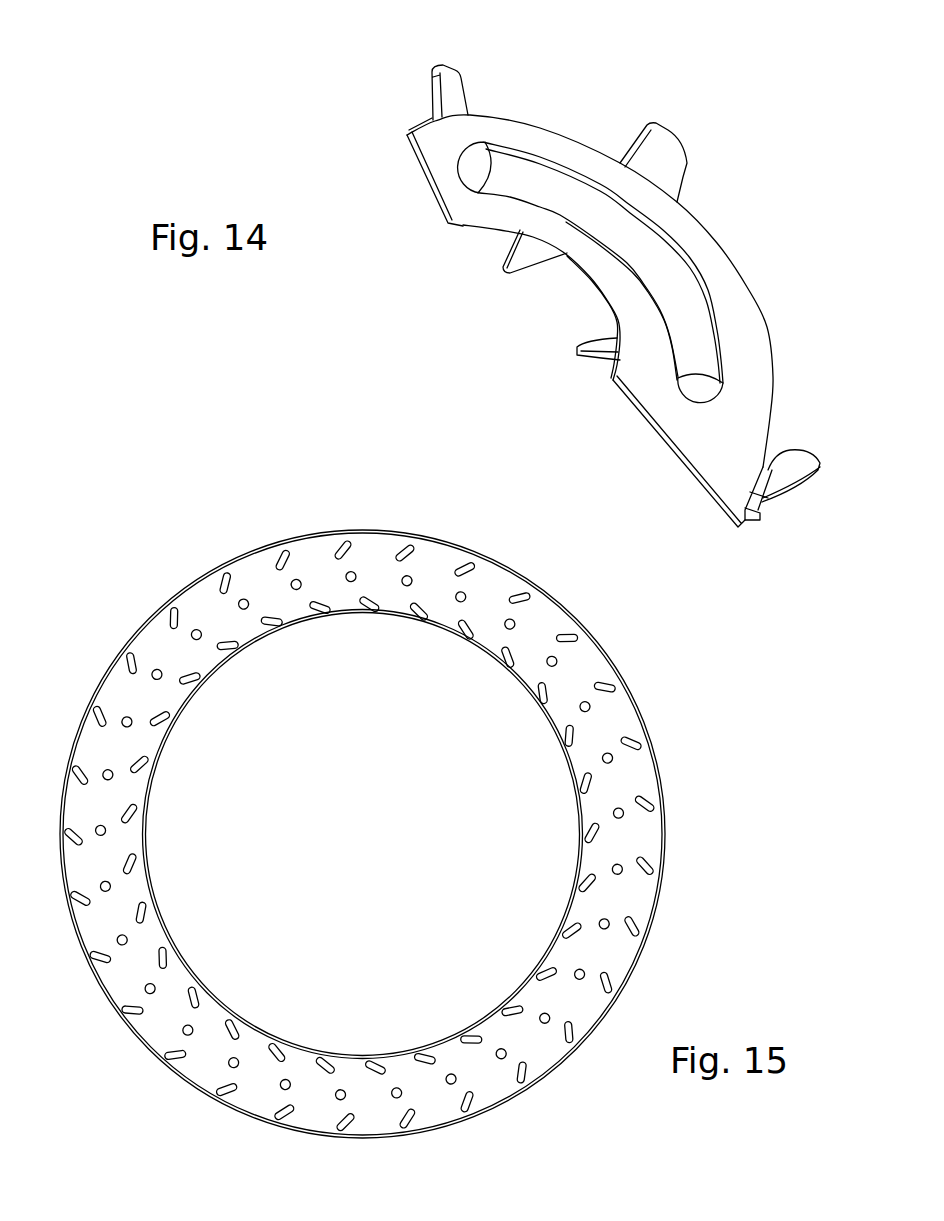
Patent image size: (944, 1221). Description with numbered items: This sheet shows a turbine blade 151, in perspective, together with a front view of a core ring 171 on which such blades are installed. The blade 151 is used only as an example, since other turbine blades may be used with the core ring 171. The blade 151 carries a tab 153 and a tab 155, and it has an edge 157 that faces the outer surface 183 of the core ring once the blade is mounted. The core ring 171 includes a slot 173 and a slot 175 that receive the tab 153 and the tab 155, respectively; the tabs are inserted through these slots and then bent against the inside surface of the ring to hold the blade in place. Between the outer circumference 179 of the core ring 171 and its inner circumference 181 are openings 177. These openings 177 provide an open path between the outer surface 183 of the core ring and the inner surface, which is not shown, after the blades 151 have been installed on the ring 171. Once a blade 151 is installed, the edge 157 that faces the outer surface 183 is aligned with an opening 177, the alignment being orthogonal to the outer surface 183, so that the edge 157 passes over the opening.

In FIG. 14, the turbine blade 151 is at (597, 86).
In FIG. 14, the tab 153 is at (580, 358).
In FIG. 14, the tab 155 is at (503, 266).
In FIG. 14, the edge 157 is at (458, 226).
In FIG. 15, the core ring 171 is at (297, 508).
In FIG. 15, the slot 173 is at (614, 683).
In FIG. 15, the slot 175 is at (152, 722).
In FIG. 15, the openings 177 is at (197, 633).
In FIG. 15, the outer circumference 179 is at (520, 575).
In FIG. 15, the inner circumference 181 is at (572, 860).
In FIG. 15, the outer surface 183 is at (563, 712).